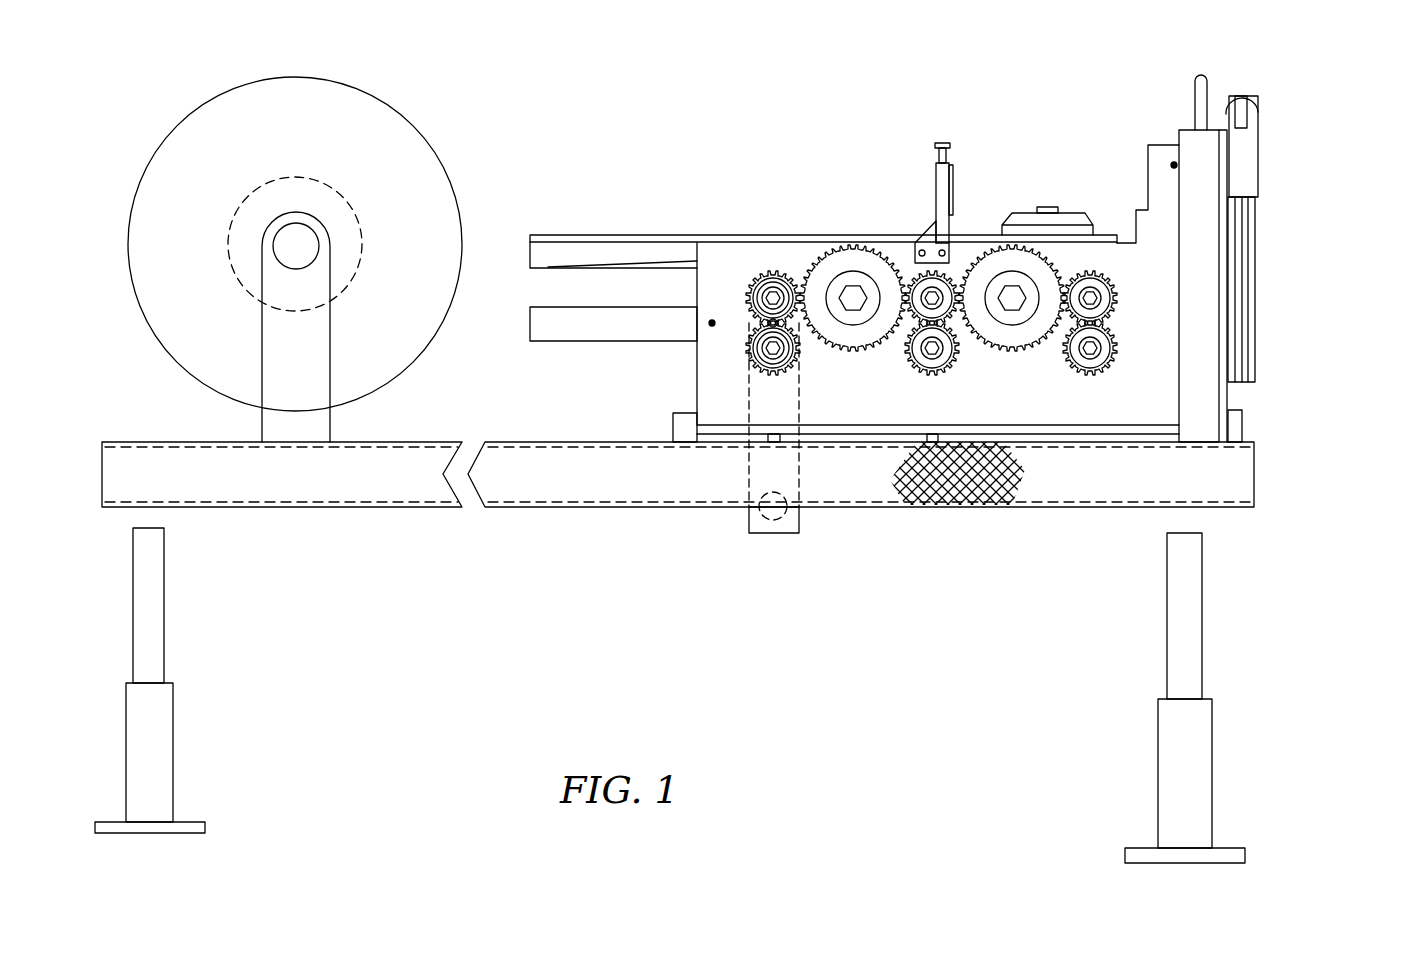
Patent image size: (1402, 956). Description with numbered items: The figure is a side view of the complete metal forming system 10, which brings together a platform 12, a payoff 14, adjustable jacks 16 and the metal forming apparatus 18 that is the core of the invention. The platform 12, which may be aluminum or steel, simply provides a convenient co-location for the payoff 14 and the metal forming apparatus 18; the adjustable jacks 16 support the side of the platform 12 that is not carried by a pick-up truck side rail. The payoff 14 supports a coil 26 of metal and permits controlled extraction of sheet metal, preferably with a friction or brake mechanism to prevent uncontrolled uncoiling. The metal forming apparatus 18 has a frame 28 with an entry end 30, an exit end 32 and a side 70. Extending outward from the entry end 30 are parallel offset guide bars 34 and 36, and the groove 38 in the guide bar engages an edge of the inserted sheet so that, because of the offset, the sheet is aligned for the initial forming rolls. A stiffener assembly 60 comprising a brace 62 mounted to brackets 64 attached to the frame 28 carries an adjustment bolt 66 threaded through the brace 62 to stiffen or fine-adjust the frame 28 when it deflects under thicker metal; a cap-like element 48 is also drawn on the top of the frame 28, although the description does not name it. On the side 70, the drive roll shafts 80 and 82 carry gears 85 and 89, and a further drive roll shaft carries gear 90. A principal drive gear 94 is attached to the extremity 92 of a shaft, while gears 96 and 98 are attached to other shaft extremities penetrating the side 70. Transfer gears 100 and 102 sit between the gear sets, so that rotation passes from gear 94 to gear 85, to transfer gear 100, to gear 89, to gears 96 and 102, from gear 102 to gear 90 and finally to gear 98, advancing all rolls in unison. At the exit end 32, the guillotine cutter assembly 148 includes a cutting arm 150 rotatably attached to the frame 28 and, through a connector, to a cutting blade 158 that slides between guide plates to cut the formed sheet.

The metal forming system 10 is at (663, 572).
The platform 12 is at (628, 494).
The payoff 14 is at (272, 383).
The adjustable jacks 16 is at (155, 592).
The metal forming apparatus 18 is at (1040, 165).
The coil 26 is at (388, 120).
The frame 28 is at (745, 238).
The entry end 30 is at (695, 403).
The exit end 32 is at (1230, 408).
The guide bar 34 is at (563, 237).
The guide bar 36 is at (563, 325).
The groove 38 is at (643, 253).
The cap 48 is at (1062, 222).
The stiffener assembly 60 is at (965, 148).
The brace 62 is at (953, 185).
The brackets 64 is at (935, 232).
The adjustment bolt 66 is at (940, 143).
The side 70 is at (1106, 409).
The shaft 80 is at (778, 295).
The shaft 82 is at (778, 365).
The gear 85 is at (767, 285).
The gear 89 is at (925, 303).
The gear 90 is at (1110, 285).
The extremity 92 is at (750, 348).
The principal drive gear 94 is at (757, 323).
The gear 96 is at (930, 360).
The gear 98 is at (1110, 340).
The transfer gear 100 is at (830, 250).
The transfer gear 102 is at (1003, 340).
The guillotine cutter assembly 148 is at (1272, 323).
The cutting arm 150 is at (1243, 93).
The cutting blade 158 is at (1240, 253).